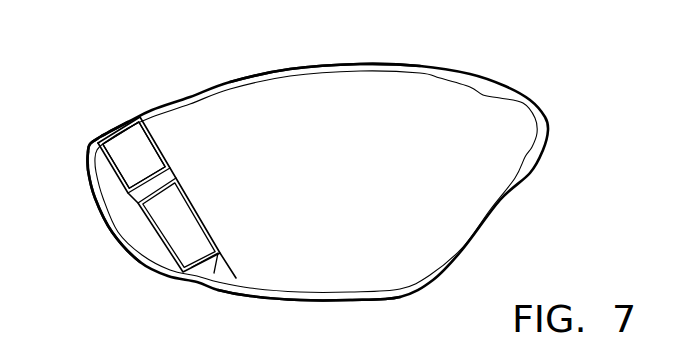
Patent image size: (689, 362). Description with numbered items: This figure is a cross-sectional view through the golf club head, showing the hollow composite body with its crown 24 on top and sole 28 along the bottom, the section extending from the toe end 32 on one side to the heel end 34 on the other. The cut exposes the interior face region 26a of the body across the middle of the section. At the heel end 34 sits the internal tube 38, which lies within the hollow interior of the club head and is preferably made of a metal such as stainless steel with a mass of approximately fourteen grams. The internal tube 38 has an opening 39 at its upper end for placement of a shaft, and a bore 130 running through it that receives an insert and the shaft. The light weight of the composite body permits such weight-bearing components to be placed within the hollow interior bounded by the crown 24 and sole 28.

The crown 24 is at (320, 58).
The face plate region / club head body 26a is at (353, 182).
The sole 28 is at (218, 303).
The toe end 32 is at (568, 133).
The heel end 34 is at (80, 190).
The internal tube 38 is at (162, 128).
The opening 39 is at (108, 130).
The bore 130 is at (145, 162).